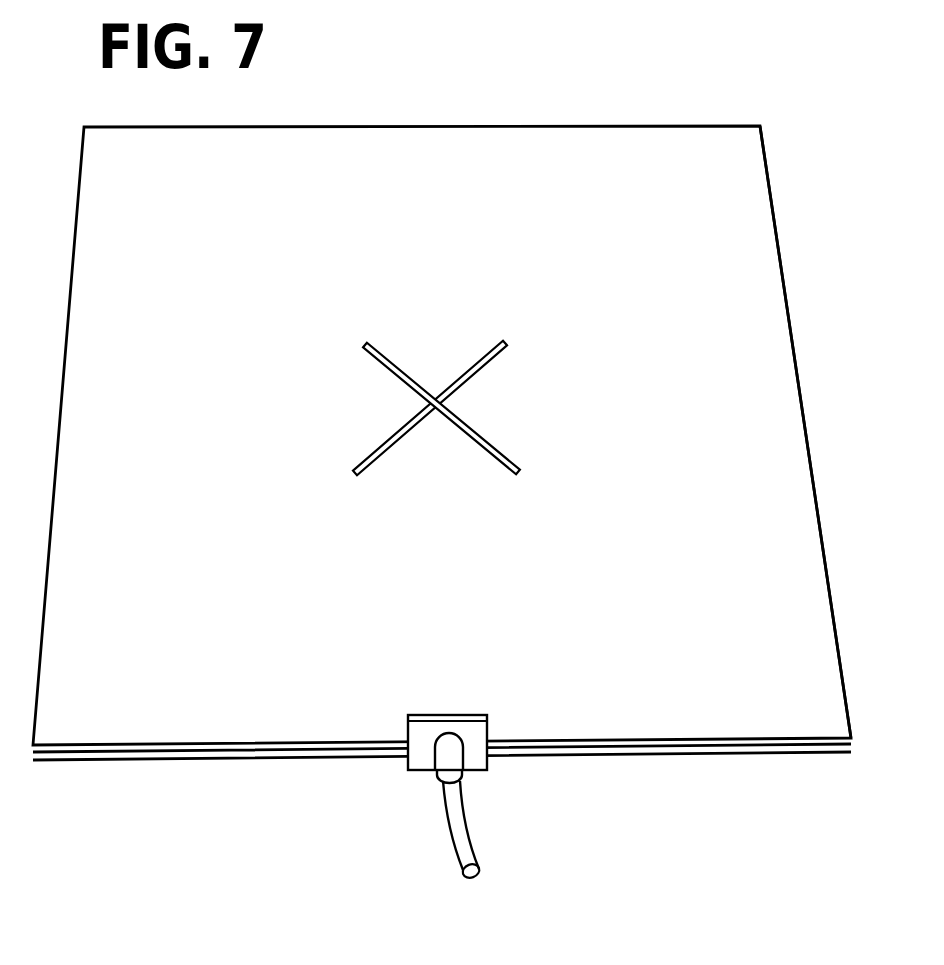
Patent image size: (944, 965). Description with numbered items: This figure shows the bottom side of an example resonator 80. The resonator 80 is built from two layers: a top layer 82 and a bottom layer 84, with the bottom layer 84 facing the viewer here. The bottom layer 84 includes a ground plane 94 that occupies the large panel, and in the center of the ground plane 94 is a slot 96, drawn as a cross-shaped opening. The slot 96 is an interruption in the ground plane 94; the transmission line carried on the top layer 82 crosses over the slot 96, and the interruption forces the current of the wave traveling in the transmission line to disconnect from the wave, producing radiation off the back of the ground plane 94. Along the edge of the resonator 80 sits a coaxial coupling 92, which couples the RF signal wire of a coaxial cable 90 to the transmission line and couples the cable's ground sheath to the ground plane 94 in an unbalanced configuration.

The resonator 80 is at (750, 80).
The top layer 82 is at (168, 752).
The bottom layer 84 is at (735, 277).
The coaxial cable 90 is at (452, 833).
The coaxial coupling 92 is at (480, 772).
The ground plane 94 is at (778, 457).
The slot 96 is at (500, 345).